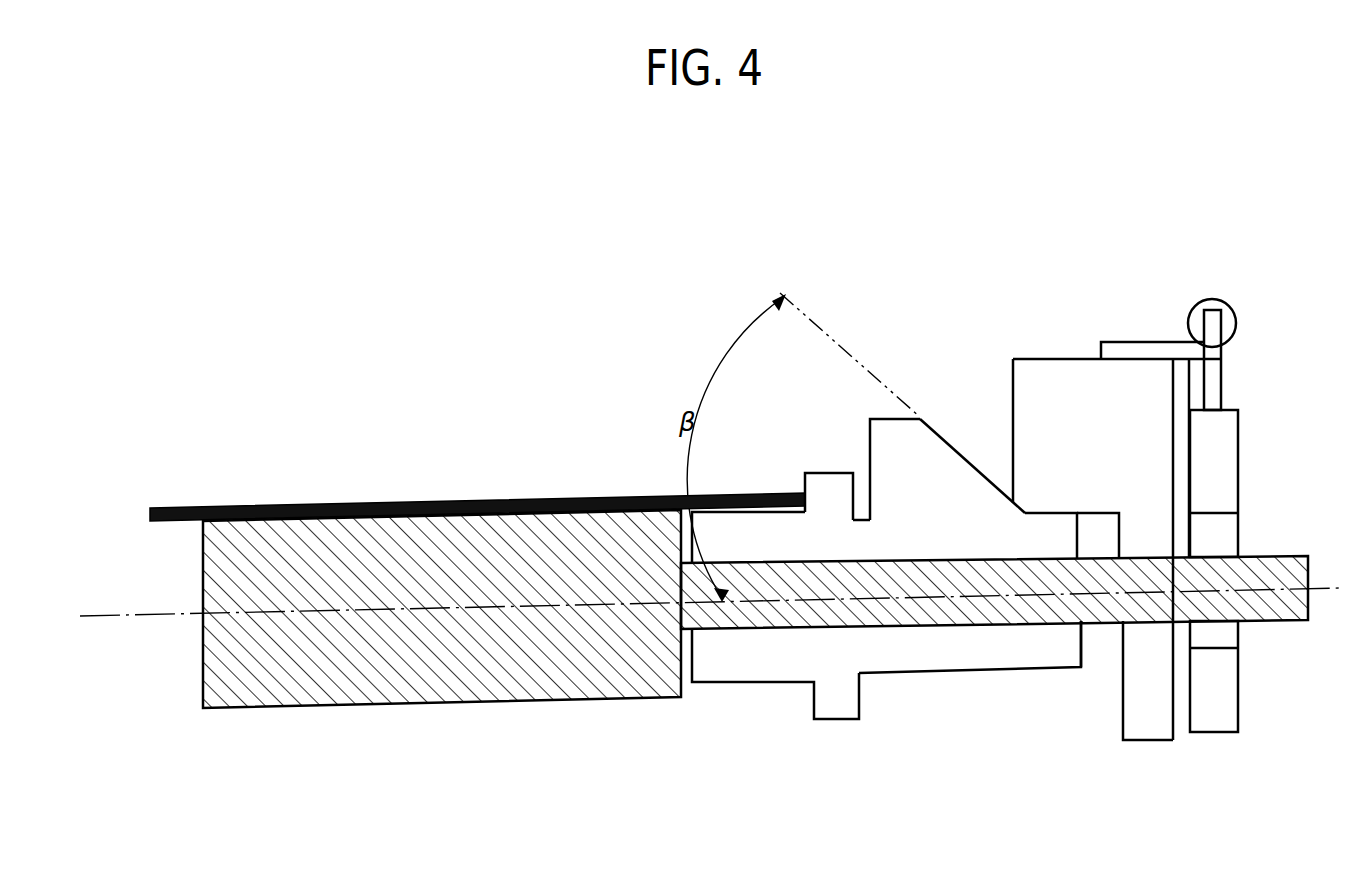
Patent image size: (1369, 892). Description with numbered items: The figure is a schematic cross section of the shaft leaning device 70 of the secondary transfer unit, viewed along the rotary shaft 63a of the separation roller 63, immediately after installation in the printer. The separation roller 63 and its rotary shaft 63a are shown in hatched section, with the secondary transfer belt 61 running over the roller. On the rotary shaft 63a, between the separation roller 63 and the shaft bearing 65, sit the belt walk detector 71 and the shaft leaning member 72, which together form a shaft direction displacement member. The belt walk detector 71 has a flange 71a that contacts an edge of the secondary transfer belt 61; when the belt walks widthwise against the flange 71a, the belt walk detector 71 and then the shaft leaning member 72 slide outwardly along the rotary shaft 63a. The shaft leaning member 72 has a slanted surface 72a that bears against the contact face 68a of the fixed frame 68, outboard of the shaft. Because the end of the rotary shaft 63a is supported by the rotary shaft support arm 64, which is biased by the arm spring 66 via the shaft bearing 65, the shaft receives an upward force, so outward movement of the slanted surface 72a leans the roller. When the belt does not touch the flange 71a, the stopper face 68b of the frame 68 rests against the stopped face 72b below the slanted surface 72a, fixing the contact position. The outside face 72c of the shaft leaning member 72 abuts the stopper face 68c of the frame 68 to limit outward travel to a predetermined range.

The shaft leaning device 70 is at (1003, 166).
The secondary transfer belt 61 is at (425, 502).
The separation roller 63 is at (434, 707).
The rotary shaft 63a is at (1273, 623).
The rotary shaft support arm 64 is at (1240, 457).
The shaft bearing 65 is at (1240, 536).
The arm spring 66 is at (1238, 323).
The frame 68 is at (1117, 572).
The contact face 68a is at (1022, 502).
The stopper face 68b is at (1117, 512).
The stopper face along the shaft direction 68c is at (1122, 726).
The belt walk detector 71 is at (781, 578).
The flange 71a is at (823, 472).
The shaft leaning member 72 is at (987, 560).
The slanted surface 72a is at (941, 432).
The stopped face 72b is at (1058, 511).
The outside face 72c is at (1082, 650).